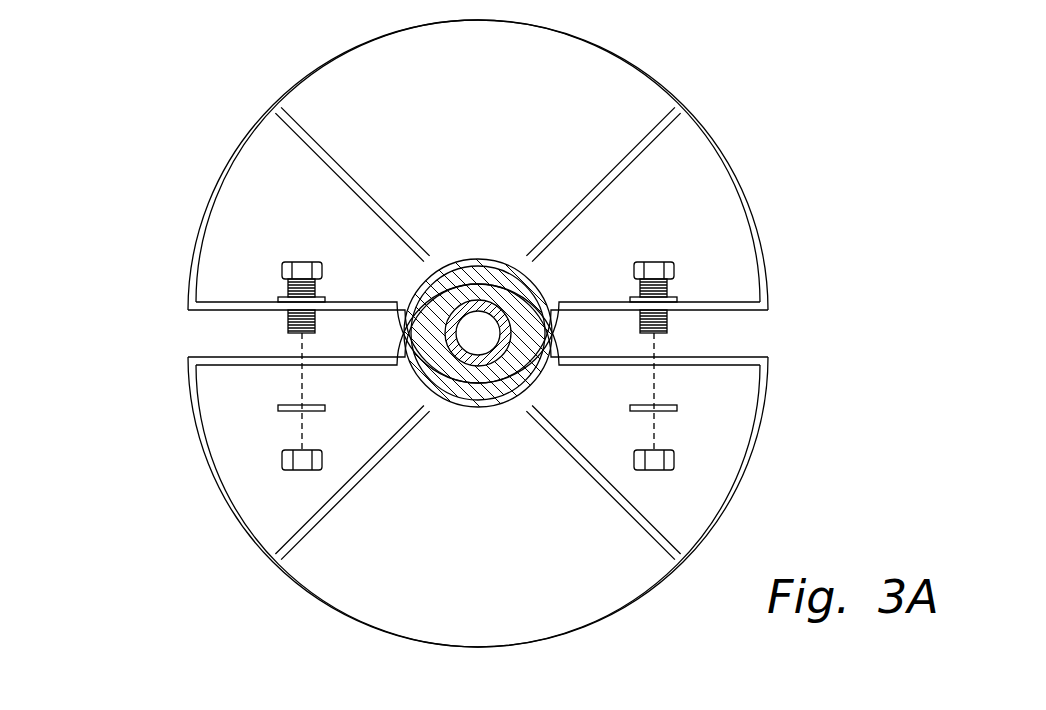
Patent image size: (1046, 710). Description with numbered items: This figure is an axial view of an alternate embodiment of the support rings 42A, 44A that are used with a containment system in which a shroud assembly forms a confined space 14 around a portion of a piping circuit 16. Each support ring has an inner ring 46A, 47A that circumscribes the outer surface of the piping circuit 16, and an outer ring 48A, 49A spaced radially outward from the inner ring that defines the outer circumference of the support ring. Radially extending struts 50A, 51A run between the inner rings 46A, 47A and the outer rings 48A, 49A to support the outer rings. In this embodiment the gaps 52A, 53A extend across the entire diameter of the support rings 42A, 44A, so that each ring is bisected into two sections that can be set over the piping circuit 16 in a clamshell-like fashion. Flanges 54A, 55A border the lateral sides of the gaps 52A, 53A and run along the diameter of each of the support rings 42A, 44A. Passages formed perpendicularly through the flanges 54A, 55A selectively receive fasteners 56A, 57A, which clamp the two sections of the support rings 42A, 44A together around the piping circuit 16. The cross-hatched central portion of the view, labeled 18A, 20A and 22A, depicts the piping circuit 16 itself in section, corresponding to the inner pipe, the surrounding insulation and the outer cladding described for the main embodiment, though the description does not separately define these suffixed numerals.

The confined space 14 is at (497, 333).
The piping circuit 16 is at (480, 308).
The inner bushing 18A is at (495, 357).
The bearing 20A is at (478, 380).
The outer bearing ring 22A is at (445, 395).
The support ring 42A is at (425, 201).
The support ring 44A is at (425, 201).
The inner ring 46A is at (347, 184).
The inner ring 47A is at (407, 262).
The outer ring 48A is at (478, 165).
The outer ring 49A is at (598, 70).
The strut 50A is at (623, 184).
The strut 51A is at (584, 214).
The gap 52A is at (497, 465).
The gap 53A is at (497, 465).
The flange 54A is at (415, 324).
The flange 55A is at (213, 356).
The fastener 56A is at (762, 359).
The fastener 57A is at (705, 272).